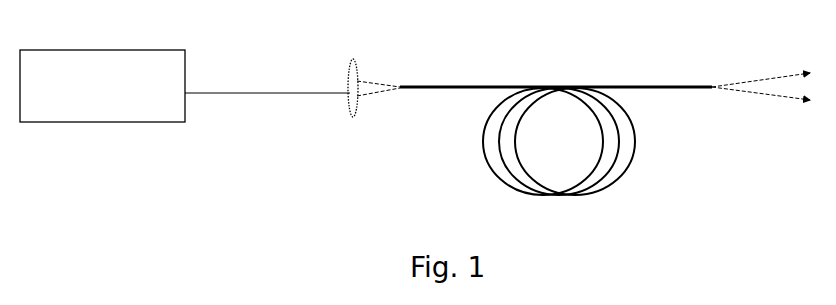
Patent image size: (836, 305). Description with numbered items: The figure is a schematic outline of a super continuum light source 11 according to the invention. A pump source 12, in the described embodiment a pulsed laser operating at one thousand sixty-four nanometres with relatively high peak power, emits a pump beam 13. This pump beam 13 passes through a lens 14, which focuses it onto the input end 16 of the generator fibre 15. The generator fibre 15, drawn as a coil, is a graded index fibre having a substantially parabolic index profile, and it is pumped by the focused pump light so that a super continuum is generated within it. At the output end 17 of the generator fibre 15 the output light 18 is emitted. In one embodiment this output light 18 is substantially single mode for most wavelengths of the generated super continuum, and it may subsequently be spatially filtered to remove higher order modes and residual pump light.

The super continuum light source 11 is at (300, 213).
The pump source 12 is at (102, 111).
The pump beam 13 is at (267, 124).
The lens 14 is at (337, 97).
The generator fibre 15 is at (543, 68).
The input end 16 is at (432, 115).
The output end 17 is at (681, 116).
The output light 18 is at (754, 122).